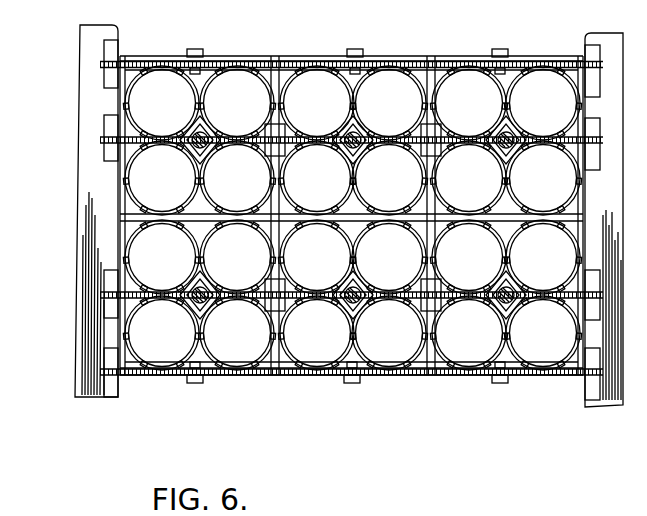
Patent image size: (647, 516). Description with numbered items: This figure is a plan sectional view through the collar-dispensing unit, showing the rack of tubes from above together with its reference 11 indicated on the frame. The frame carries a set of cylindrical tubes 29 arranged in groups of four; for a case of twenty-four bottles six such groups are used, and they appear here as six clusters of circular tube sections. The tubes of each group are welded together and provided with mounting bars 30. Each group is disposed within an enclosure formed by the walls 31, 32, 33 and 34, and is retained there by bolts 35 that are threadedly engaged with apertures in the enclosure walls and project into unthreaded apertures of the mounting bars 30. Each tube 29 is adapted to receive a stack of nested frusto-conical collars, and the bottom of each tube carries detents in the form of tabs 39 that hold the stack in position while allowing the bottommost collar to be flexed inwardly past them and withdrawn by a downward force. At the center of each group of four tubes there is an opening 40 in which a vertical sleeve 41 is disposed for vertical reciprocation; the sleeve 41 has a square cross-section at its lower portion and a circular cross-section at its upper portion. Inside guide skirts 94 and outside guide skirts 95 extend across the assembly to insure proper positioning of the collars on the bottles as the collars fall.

The rack assembly 11 is at (550, 253).
The cylindrical tubes 29 is at (241, 138).
The mounting bars 30 is at (208, 66).
The wall 31 is at (293, 378).
The wall 32 is at (297, 57).
The wall 33 is at (115, 200).
The wall 34 is at (590, 196).
The bolts 35 is at (196, 49).
The tabs 39 is at (166, 134).
The opening 40 is at (362, 156).
The vertical sleeve 41 is at (192, 148).
The inside guide skirts 94 is at (112, 139).
The outside guide skirts 95 is at (140, 62).